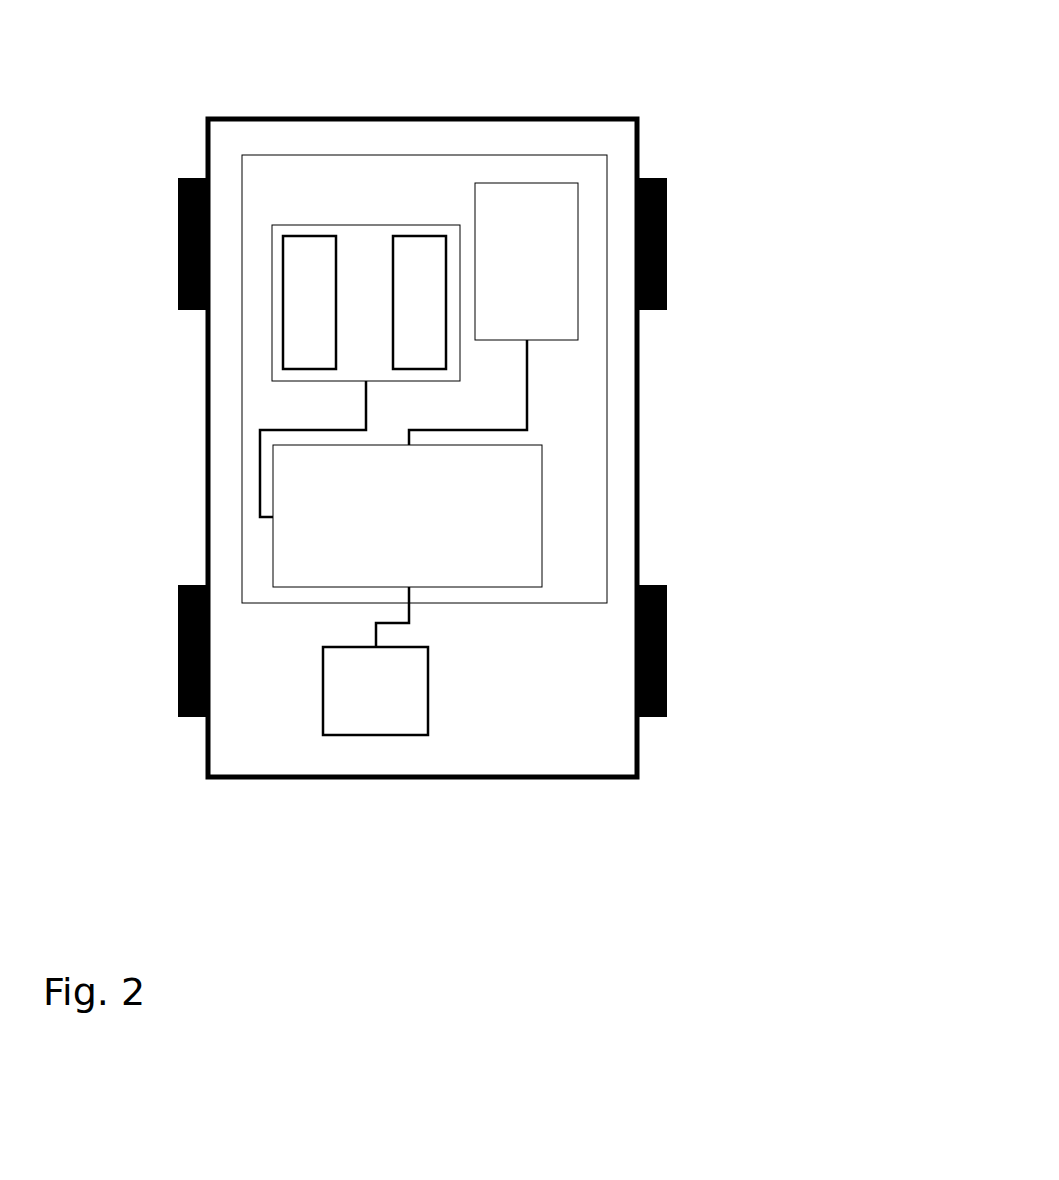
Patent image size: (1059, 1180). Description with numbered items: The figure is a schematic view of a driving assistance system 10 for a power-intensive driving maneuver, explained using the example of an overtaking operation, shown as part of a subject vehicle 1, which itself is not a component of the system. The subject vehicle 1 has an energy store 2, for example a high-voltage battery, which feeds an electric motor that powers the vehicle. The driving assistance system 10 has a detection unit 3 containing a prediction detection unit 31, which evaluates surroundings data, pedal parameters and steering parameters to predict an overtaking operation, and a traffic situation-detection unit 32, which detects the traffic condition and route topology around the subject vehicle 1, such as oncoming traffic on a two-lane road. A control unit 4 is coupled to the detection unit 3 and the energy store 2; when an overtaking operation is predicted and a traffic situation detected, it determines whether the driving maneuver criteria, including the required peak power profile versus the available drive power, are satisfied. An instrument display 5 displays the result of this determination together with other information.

The subject vehicle 1 is at (640, 449).
The driving assistance system 10 is at (425, 157).
The detection unit 3 is at (365, 224).
The prediction detection unit 31 is at (310, 237).
The traffic situation-detection unit 32 is at (419, 238).
The instrument display 5 is at (527, 183).
The control unit 4 is at (542, 516).
The energy store 2 is at (376, 735).